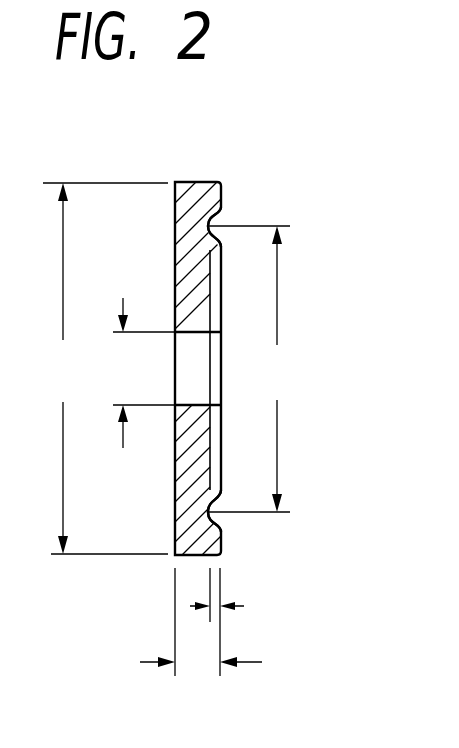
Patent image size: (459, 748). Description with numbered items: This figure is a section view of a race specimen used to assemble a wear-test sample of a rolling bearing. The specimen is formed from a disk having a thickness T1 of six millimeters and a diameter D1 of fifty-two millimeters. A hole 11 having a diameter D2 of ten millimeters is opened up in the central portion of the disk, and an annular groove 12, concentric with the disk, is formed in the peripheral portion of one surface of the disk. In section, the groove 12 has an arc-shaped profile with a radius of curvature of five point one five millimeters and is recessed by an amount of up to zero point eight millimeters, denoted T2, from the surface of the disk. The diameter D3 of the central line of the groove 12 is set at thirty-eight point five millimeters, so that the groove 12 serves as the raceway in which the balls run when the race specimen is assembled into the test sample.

The hole 11 is at (177, 341).
The annular groove 12 is at (214, 221).
The disk diameter D1 is at (105, 368).
The hole diameter D2 is at (142, 373).
The groove central-line diameter D3 is at (251, 369).
The disk thickness T1 is at (201, 626).
The groove recess depth T2 is at (214, 603).